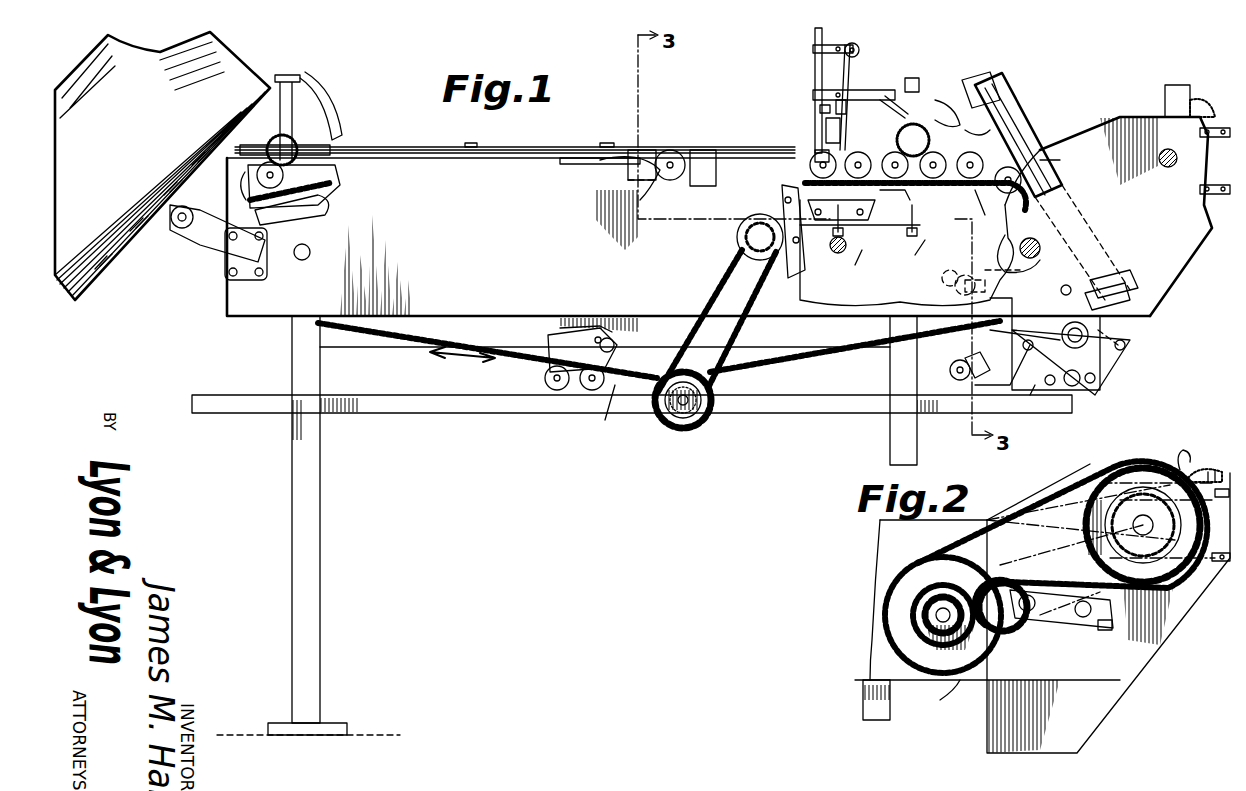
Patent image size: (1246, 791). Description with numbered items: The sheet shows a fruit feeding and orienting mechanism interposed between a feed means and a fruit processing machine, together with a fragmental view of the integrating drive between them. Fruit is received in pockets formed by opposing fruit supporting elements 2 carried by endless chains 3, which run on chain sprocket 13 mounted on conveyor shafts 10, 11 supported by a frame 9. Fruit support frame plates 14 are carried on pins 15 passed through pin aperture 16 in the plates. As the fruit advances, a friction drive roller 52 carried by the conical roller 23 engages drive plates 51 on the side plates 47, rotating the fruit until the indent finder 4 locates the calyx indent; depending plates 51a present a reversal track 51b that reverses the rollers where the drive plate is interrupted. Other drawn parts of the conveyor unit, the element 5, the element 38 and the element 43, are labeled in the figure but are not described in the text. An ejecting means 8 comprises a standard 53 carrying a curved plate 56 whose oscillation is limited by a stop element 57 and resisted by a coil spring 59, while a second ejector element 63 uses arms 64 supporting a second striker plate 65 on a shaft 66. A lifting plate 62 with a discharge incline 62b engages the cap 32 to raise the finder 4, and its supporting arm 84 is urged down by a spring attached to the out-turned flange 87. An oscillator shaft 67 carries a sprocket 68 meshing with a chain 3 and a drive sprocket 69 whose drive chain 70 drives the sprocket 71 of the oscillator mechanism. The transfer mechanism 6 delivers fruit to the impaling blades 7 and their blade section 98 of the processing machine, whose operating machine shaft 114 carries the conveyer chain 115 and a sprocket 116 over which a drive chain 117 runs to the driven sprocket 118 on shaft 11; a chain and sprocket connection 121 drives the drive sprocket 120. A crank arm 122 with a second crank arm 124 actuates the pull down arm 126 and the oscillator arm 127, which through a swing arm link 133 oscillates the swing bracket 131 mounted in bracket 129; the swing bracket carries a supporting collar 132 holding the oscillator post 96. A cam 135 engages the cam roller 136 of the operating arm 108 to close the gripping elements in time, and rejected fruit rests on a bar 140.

In FIG. 1, the fruit supporting elements 2 is at (330, 168).
In FIG. 1, the endless chains 3 is at (810, 358).
In FIG. 1, the indent finder 4 is at (818, 150).
In FIG. 1, the roller 5 is at (855, 148).
In FIG. 1, the transfer mechanism 6 is at (1012, 98).
In FIG. 1, the impaling blades 7 is at (1165, 100).
In FIG. 2, the impaling blades 7 is at (1183, 450).
In FIG. 1, the ejecting means 8 is at (805, 87).
In FIG. 1, the frame 9 is at (292, 358).
In FIG. 1, the conveyor shaft 10 is at (305, 245).
In FIG. 1, the conveyor shaft 11 is at (1012, 246).
In FIG. 2, the conveyor shaft 11 is at (930, 612).
In FIG. 1, the chain sprocket 13 is at (258, 222).
In FIG. 1, the fruit support frame plates 14 is at (545, 350).
In FIG. 1, the pins 15 is at (969, 202).
In FIG. 1, the pin aperture 16 is at (897, 188).
In FIG. 1, the conical roller 23 is at (553, 390).
In FIG. 1, the cap 32 is at (850, 226).
In FIG. 1, the carriage 38 is at (578, 330).
In FIG. 1, the roller 43 is at (616, 342).
In FIG. 1, the side plates 47 is at (505, 170).
In FIG. 2, the side plates 47 is at (878, 555).
In FIG. 1, the drive plates 51 is at (445, 158).
In FIG. 1, the depending plates 51a is at (635, 175).
In FIG. 1, the reversal track 51b is at (636, 182).
In FIG. 1, the friction drive roller 52 is at (672, 150).
In FIG. 1, the standard 53 is at (815, 70).
In FIG. 1, the curved plate 56 is at (850, 126).
In FIG. 1, the stop element 57 is at (871, 91).
In FIG. 1, the coil spring 59 is at (855, 104).
In FIG. 1, the lifting plate 62 is at (865, 259).
In FIG. 1, the discharge incline 62b is at (910, 251).
In FIG. 1, the second ejector element 63 is at (942, 106).
In FIG. 1, the arms 64 is at (882, 95).
In FIG. 1, the second striker plate 65 is at (979, 102).
In FIG. 1, the shaft 66 is at (925, 80).
In FIG. 1, the oscillator shaft 67 is at (675, 425).
In FIG. 1, the sprocket 68 is at (703, 420).
In FIG. 1, the drive sprocket 69 is at (692, 372).
In FIG. 1, the drive chain 70 is at (720, 275).
In FIG. 1, the sprocket 71 is at (748, 240).
In FIG. 1, the supporting arm 84 is at (838, 253).
In FIG. 2, the out-turned flange 87 is at (939, 699).
In FIG. 1, the oscillator post 96 is at (1061, 160).
In FIG. 1, the blade section 98 is at (1202, 93).
In FIG. 2, the blade section 98 is at (1205, 459).
In FIG. 1, the operating arm 108 is at (1122, 352).
In FIG. 1, the operating machine shaft 114 is at (1165, 167).
In FIG. 1, the conveyer chain 115 is at (1222, 185).
In FIG. 2, the conveyer chain 115 is at (1222, 562).
In FIG. 2, the sprocket 116 is at (1150, 552).
In FIG. 2, the drive chain 117 is at (975, 545).
In FIG. 2, the driven sprocket 118 is at (920, 565).
In FIG. 2, the drive sprocket 120 is at (925, 622).
In FIG. 2, the chain and sprocket connection 121 is at (1140, 470).
In FIG. 1, the crank arm 122 is at (1021, 266).
In FIG. 1, the second crank arm 124 is at (952, 290).
In FIG. 1, the pull down arm 126 is at (1000, 340).
In FIG. 1, the oscillator arm 127 is at (958, 358).
In FIG. 1, the bracket 129 is at (1031, 400).
In FIG. 1, the swing bracket 131 is at (1128, 290).
In FIG. 1, the supporting collar 132 is at (1122, 262).
In FIG. 1, the swing arm link 133 is at (1002, 370).
In FIG. 1, the cam 135 is at (1064, 296).
In FIG. 1, the cam roller 136 is at (1100, 385).
In FIG. 1, the bar 140 is at (230, 150).